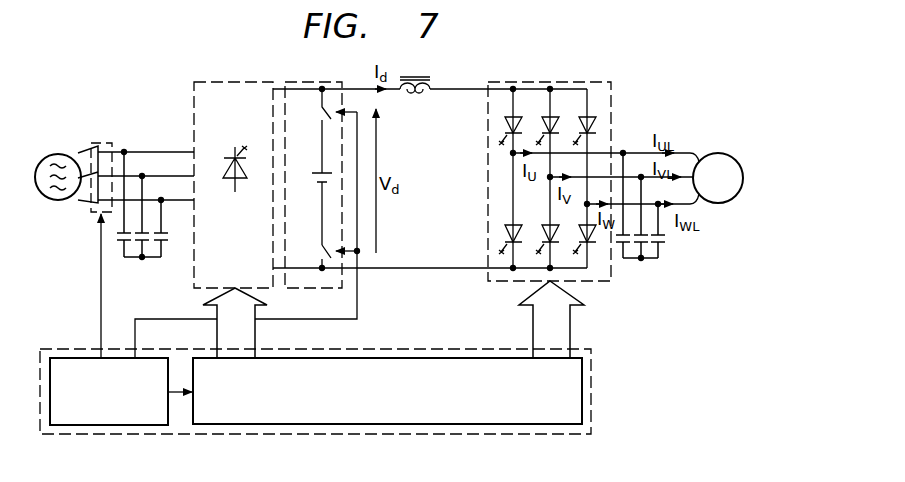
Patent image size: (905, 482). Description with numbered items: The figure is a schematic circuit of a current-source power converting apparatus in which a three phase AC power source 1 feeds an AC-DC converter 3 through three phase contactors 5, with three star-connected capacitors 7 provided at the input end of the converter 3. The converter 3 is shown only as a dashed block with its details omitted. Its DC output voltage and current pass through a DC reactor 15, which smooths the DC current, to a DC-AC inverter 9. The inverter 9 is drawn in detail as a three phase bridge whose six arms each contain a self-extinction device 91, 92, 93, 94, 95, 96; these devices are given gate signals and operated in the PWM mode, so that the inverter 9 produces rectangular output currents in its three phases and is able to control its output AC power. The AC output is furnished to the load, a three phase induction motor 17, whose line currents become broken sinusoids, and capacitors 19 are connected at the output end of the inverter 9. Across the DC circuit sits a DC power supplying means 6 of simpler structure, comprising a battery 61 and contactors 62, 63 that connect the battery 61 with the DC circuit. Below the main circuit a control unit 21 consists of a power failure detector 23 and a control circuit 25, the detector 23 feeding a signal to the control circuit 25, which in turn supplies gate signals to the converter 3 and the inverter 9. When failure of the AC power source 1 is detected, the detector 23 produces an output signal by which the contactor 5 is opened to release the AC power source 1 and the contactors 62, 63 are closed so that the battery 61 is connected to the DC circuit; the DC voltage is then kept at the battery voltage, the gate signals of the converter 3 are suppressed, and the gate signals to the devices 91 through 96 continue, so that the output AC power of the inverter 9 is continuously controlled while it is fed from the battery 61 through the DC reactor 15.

The three phase AC power source 1 is at (57, 153).
The AC-DC converter 3 is at (225, 81).
The three phase contactors 5 is at (101, 143).
The DC power supplying means 6 is at (247, 202).
The capacitors 7 is at (118, 248).
The DC-AC inverter 9 is at (553, 202).
The DC reactor 15 is at (415, 77).
The three phase induction motor 17 is at (720, 153).
The capacitors 19 is at (667, 237).
The control unit 21 is at (315, 412).
The power failure detector 23 is at (117, 427).
The control circuit 25 is at (470, 425).
The battery 61 is at (312, 174).
The contactor 62 is at (326, 116).
The contactor 63 is at (320, 253).
The self-extinction device 91 is at (503, 122).
The self-extinction device 92 is at (538, 128).
The self-extinction device 93 is at (580, 127).
The self-extinction device 94 is at (503, 233).
The self-extinction device 95 is at (540, 233).
The self-extinction device 96 is at (600, 233).